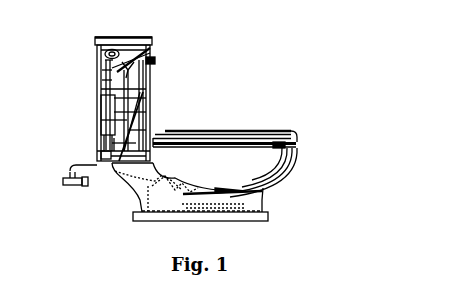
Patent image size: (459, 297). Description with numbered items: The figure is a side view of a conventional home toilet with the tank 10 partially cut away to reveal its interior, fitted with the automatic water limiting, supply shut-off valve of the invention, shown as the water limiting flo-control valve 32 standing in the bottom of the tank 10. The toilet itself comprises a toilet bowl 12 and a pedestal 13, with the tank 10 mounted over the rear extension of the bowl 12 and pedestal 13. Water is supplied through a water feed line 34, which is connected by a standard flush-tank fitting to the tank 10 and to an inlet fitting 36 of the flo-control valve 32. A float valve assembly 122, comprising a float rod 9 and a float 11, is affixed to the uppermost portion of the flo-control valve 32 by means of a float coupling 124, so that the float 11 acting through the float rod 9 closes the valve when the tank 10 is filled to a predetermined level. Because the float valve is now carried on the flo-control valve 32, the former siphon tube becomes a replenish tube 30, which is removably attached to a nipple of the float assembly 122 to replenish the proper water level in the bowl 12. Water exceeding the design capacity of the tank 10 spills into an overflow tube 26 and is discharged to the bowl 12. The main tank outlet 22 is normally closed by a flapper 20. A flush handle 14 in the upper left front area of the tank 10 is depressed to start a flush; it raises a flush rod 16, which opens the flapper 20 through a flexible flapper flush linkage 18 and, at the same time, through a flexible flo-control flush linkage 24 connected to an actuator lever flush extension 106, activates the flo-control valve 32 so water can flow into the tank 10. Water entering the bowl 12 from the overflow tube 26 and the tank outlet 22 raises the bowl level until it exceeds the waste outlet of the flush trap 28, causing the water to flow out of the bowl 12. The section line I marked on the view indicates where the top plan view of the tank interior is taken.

The float 11 is at (96, 45).
The tank 10 is at (105, 51).
The float rod 9 is at (102, 63).
The float valve assembly 122 is at (96, 78).
The float coupling 124 is at (110, 107).
The water limiting flo-control valve 32 is at (100, 129).
The inlet fitting 36 is at (101, 153).
The water feed line 34 is at (70, 171).
The main tank outlet 22 is at (119, 161).
The replenish tube 30 is at (140, 58).
The flush rod 16 is at (150, 54).
The flush handle 14 is at (158, 61).
The overflow tube 26 is at (150, 72).
The flexible flo-control flush linkage 24 is at (152, 90).
The flexible flapper flush linkage 18 is at (146, 98).
The actuator lever flush extension 106 is at (140, 122).
The flapper 20 is at (138, 131).
The toilet bowl 12 is at (297, 161).
The pedestal 13 is at (264, 195).
The flush trap 28 is at (268, 209).
The section line I— I is at (253, 91).